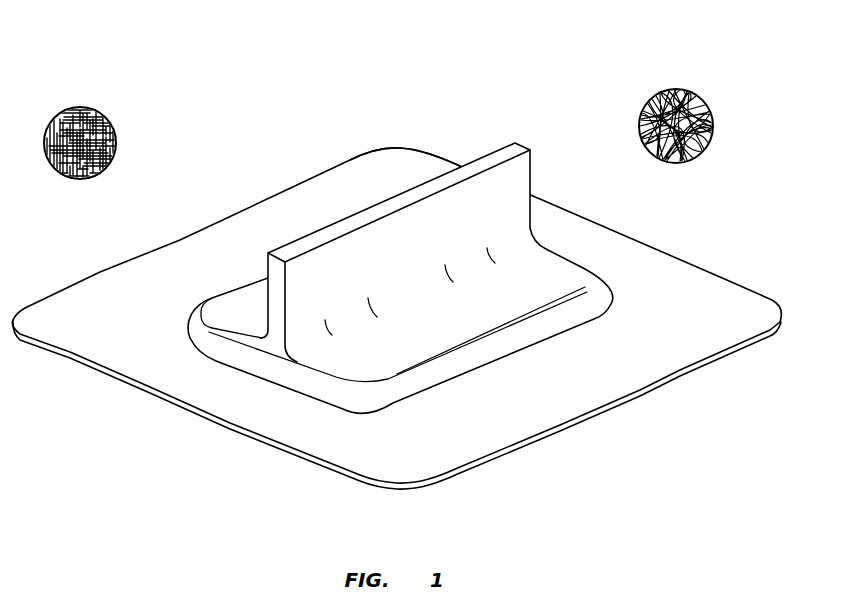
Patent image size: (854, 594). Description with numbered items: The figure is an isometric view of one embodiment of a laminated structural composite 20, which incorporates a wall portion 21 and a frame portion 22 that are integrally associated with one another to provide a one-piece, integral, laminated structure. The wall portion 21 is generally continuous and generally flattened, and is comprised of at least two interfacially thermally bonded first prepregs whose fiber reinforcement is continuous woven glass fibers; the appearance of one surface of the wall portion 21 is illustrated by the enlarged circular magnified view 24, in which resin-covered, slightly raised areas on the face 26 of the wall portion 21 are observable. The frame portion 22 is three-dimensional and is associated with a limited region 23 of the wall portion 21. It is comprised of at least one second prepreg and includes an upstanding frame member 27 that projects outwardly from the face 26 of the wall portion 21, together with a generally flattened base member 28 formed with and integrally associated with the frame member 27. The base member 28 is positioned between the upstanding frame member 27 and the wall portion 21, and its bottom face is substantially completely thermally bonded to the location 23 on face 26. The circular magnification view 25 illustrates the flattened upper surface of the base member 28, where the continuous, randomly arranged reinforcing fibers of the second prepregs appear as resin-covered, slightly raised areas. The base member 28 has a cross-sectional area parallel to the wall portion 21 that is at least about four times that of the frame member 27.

The structural composite 20 is at (400, 258).
The wall portion 21 is at (762, 301).
The frame portion 22 is at (522, 190).
The limited region 23 is at (496, 363).
The enlarged circular magnified view 24 is at (148, 272).
The circular magnification view 25 is at (567, 271).
The face of the wall portion 26 is at (364, 169).
The upstanding frame member 27 is at (528, 172).
The base member 28 is at (324, 382).